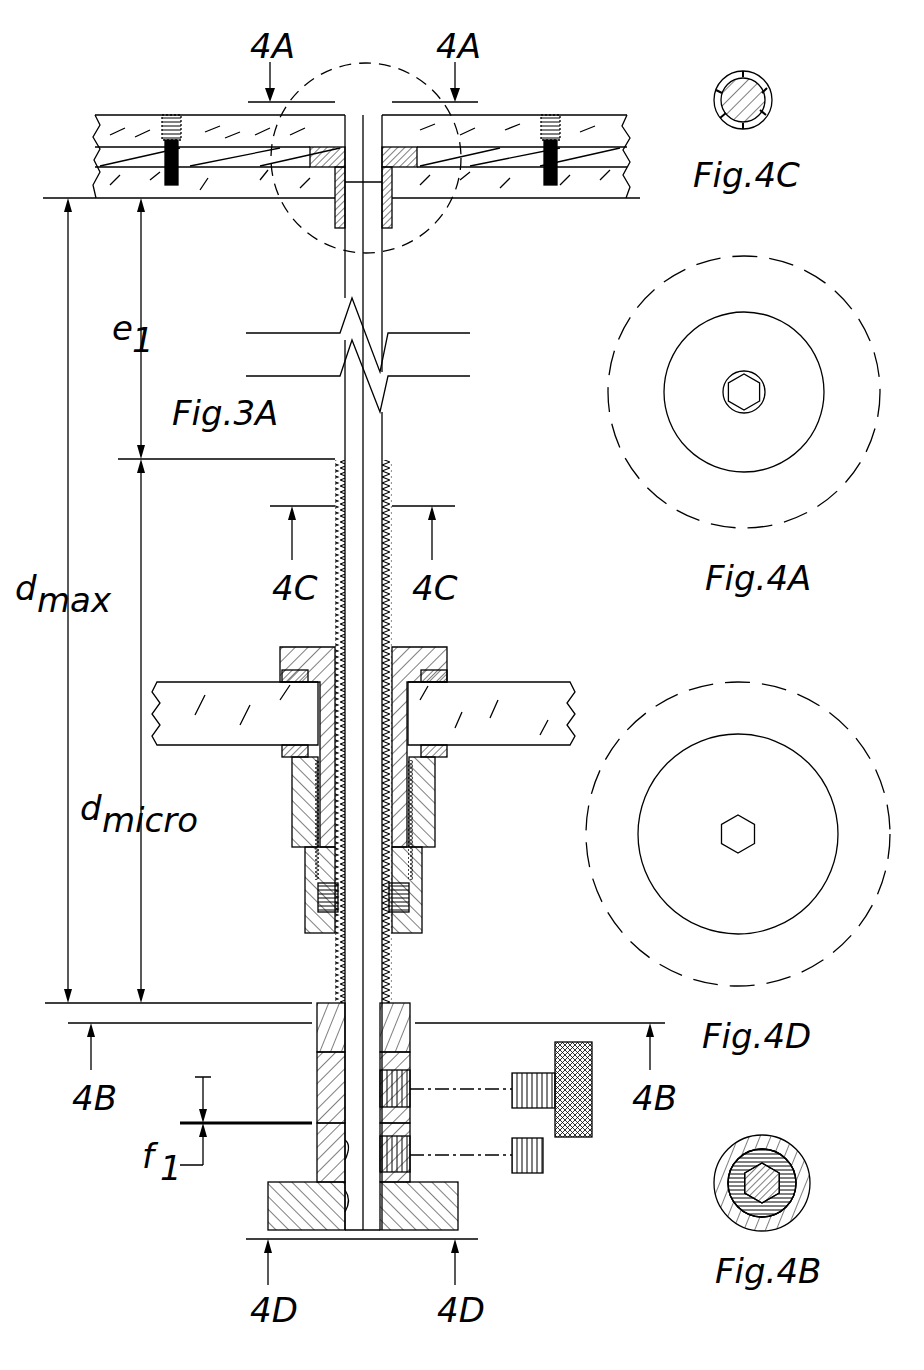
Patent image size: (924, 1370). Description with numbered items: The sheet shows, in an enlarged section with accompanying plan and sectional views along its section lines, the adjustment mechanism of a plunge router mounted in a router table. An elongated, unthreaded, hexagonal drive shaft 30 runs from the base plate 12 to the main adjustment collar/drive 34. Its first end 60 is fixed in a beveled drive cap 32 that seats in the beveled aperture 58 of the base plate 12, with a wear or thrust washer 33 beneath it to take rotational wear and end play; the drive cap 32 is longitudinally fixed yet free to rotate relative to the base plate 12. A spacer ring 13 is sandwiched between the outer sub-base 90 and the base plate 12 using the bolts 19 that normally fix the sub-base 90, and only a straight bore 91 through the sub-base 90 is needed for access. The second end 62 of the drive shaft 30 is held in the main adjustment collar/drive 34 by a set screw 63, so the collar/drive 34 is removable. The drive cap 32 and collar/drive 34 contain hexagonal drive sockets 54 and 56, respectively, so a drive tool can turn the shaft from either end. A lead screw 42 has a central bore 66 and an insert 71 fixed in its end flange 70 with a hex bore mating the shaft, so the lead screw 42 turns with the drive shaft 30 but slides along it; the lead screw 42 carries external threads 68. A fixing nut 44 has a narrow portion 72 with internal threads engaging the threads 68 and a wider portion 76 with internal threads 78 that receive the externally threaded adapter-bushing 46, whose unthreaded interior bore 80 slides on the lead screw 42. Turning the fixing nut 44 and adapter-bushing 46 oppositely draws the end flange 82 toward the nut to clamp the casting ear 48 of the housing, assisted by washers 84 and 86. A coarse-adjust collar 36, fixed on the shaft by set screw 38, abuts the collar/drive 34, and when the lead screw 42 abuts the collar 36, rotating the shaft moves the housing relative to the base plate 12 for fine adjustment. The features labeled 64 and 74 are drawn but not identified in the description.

In FIG. 3A, the base plate 12 is at (590, 200).
In FIG. 4B, the base plate 12 is at (765, 1185).
In FIG. 3A, the spacer ring 13 is at (615, 157).
In FIG. 3A, the bolts 19 is at (172, 114).
In FIG. 3A, the drive shaft 30 is at (358, 672).
In FIG. 4C, the drive shaft 30 is at (745, 100).
In FIG. 3A, the drive cap 32 is at (248, 165).
In FIG. 4A, the drive cap 32 is at (680, 378).
In FIG. 3A, the thrust washer 33 is at (388, 190).
In FIG. 3A, the main adjustment collar/drive 34 is at (457, 1215).
In FIG. 4D, the main adjustment collar/drive 34 is at (720, 760).
In FIG. 3A, the coarse-adjust collar 36 is at (325, 1085).
In FIG. 3A, the set screw 38 is at (568, 1137).
In FIG. 3A, the lead screw 42 is at (385, 472).
In FIG. 4C, the lead screw 42 is at (725, 75).
In FIG. 4B, the lead screw 42 is at (772, 1138).
In FIG. 3A, the fixing nut 44 is at (422, 905).
In FIG. 3A, the adapter-bushing 46 is at (425, 647).
In FIG. 3A, the boss or casting ear 48 is at (222, 686).
In FIG. 3A, the drive socket 54 is at (340, 215).
In FIG. 4A, the drive socket 54 is at (735, 395).
In FIG. 3A, the drive socket 56 is at (345, 1195).
In FIG. 4D, the drive socket 56 is at (740, 825).
In FIG. 3A, the beveled aperture 58 is at (410, 160).
In FIG. 3A, the first end 60 is at (345, 286).
In FIG. 3A, the second end 62 is at (340, 1130).
In FIG. 3A, the set screw 63 is at (527, 1173).
In FIG. 3A, the slot 64 is at (345, 1145).
In FIG. 3A, the bore 66 is at (388, 462).
In FIG. 4B, the bore 66 is at (745, 1180).
In FIG. 3A, the external threads 68 is at (390, 482).
In FIG. 3A, the end flange 70 is at (412, 1010).
In FIG. 4B, the end flange 70 is at (735, 1222).
In FIG. 3A, the insert 71 is at (335, 1030).
In FIG. 4B, the insert 71 is at (770, 1165).
In FIG. 3A, the narrow portion 72 is at (412, 925).
In FIG. 3A, the thread 74 is at (392, 945).
In FIG. 3A, the wider portion 76 is at (435, 800).
In FIG. 3A, the internal threads 78 is at (400, 890).
In FIG. 3A, the interior bore 80 is at (345, 660).
In FIG. 3A, the end flange 82 is at (290, 647).
In FIG. 3A, the washer 84 is at (290, 676).
In FIG. 3A, the washer 86 is at (292, 758).
In FIG. 3A, the sub-base 90 is at (595, 114).
In FIG. 3A, the straight bore 91 is at (395, 70).